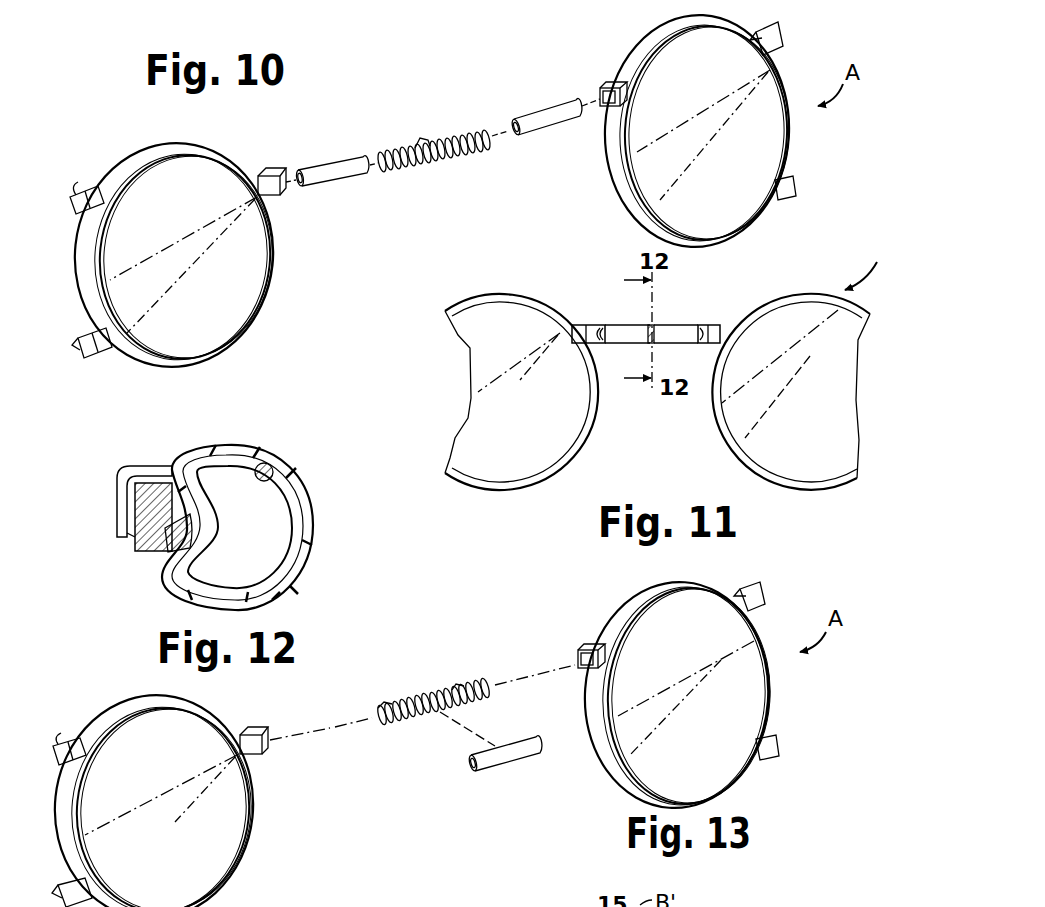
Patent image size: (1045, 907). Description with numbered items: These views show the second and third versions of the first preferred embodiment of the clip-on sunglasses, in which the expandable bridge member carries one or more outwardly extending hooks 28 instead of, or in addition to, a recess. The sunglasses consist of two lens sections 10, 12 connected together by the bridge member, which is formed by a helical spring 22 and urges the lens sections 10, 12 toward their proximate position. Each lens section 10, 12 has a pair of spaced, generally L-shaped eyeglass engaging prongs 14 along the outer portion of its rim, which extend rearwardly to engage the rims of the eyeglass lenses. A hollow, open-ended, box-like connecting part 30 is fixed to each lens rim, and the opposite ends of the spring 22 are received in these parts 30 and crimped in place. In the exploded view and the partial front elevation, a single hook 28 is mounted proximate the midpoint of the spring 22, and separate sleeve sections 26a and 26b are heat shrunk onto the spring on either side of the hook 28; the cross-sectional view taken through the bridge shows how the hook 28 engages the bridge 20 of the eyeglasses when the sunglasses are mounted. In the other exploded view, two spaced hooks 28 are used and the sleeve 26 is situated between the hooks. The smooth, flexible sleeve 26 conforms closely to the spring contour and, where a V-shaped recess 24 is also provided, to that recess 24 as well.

In FIG. 10, the lens section 10 is at (226, 309).
In FIG. 11, the lens section 10 is at (550, 418).
In FIG. 13, the lens section 10 is at (200, 853).
In FIG. 10, the lens section 12 is at (753, 189).
In FIG. 11, the lens section 12 is at (833, 415).
In FIG. 13, the lens section 12 is at (724, 739).
In FIG. 10, the eyeglass engaging prong 14 is at (84, 186).
In FIG. 13, the eyeglass engaging prong 14 is at (66, 742).
In FIG. 12, the bridge 20 is at (136, 544).
In FIG. 12, the helical spring 22 is at (283, 484).
In FIG. 12, the V shaped recess 24 is at (168, 548).
In FIG. 13, the sleeve 26 is at (498, 768).
In FIG. 10, the sleeve section 26a is at (342, 166).
In FIG. 11, the sleeve section 26a is at (620, 338).
In FIG. 12, the sleeve section 26a is at (313, 522).
In FIG. 10, the sleeve section 26b is at (546, 116).
In FIG. 11, the sleeve section 26b is at (682, 328).
In FIG. 10, the hook 28 is at (446, 146).
In FIG. 12, the hook 28 is at (146, 468).
In FIG. 13, the hook 28 is at (380, 704).
In FIG. 10, the connecting part 30 is at (270, 168).
In FIG. 11, the connecting part 30 is at (586, 325).
In FIG. 13, the connecting part 30 is at (250, 728).